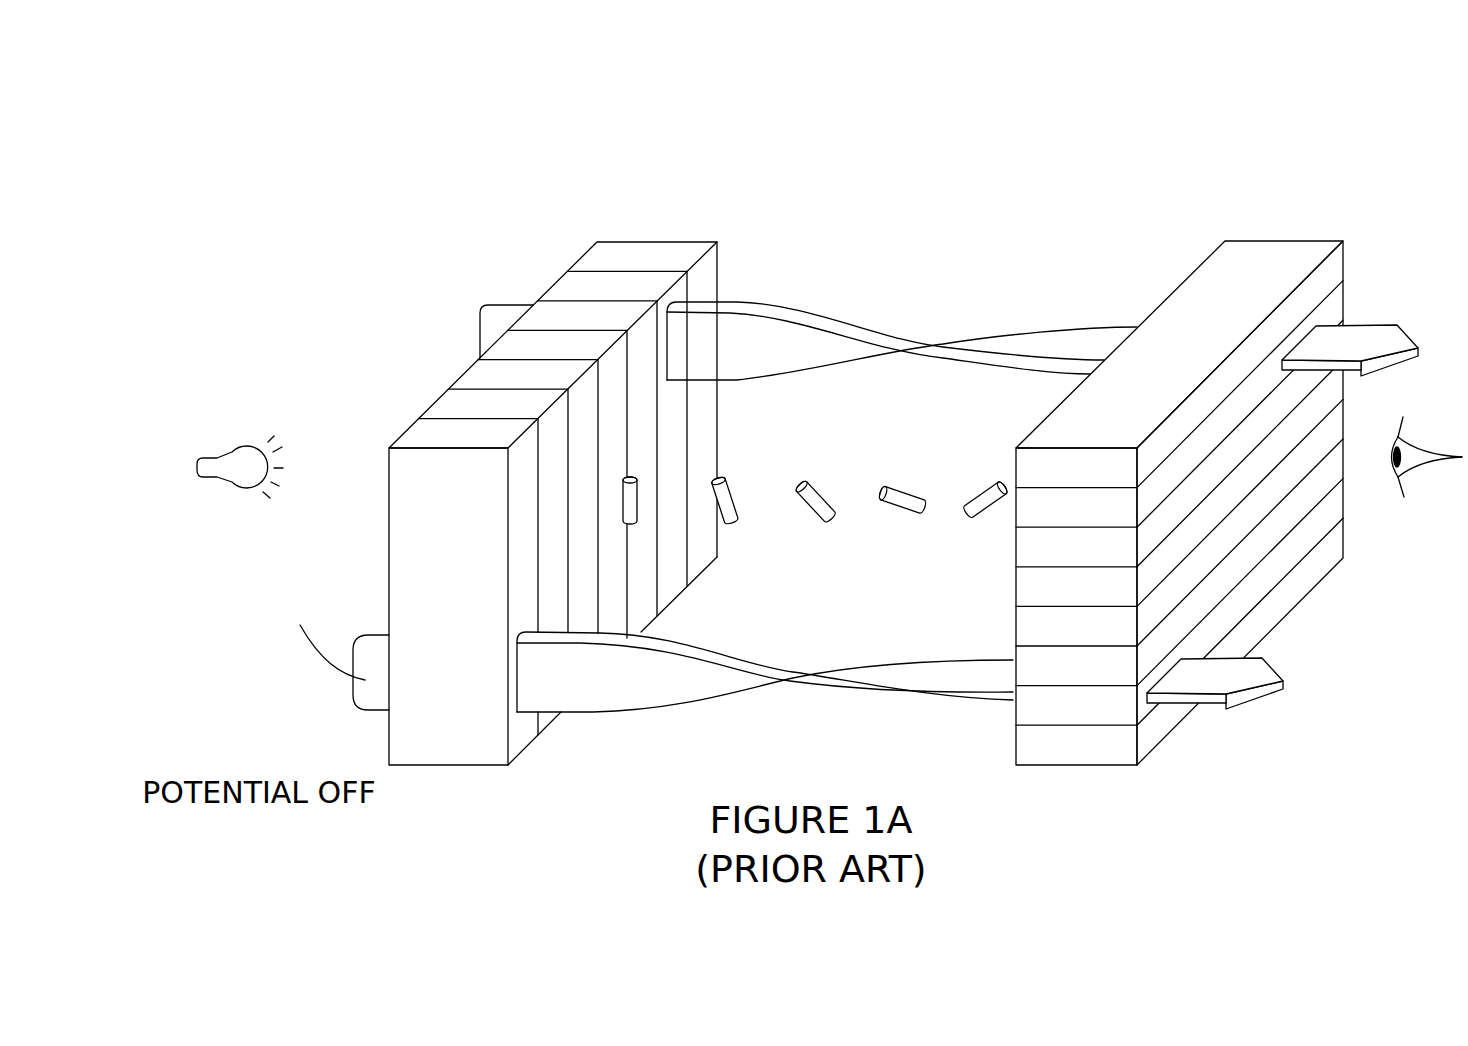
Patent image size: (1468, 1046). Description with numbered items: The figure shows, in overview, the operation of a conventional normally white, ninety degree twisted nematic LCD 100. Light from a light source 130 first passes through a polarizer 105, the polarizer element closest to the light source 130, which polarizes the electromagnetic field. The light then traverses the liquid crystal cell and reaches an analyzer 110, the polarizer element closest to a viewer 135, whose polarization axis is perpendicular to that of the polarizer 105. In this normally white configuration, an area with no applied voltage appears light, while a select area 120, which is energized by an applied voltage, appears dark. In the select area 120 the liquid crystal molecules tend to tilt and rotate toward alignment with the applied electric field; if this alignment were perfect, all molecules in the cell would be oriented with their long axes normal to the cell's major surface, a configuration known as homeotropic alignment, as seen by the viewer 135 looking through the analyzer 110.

The twisted nematic LCD 100 is at (1116, 203).
The polarizer 105 is at (680, 240).
The analyzer 110 is at (1287, 250).
The select area 120 is at (896, 410).
The light source 130 is at (233, 440).
The viewer 135 is at (1426, 456).